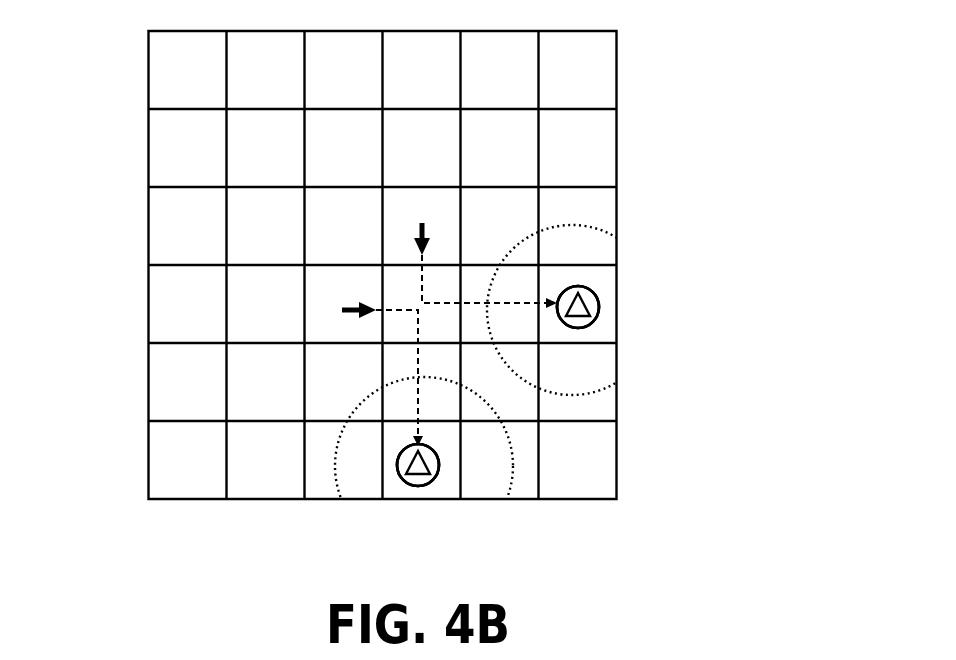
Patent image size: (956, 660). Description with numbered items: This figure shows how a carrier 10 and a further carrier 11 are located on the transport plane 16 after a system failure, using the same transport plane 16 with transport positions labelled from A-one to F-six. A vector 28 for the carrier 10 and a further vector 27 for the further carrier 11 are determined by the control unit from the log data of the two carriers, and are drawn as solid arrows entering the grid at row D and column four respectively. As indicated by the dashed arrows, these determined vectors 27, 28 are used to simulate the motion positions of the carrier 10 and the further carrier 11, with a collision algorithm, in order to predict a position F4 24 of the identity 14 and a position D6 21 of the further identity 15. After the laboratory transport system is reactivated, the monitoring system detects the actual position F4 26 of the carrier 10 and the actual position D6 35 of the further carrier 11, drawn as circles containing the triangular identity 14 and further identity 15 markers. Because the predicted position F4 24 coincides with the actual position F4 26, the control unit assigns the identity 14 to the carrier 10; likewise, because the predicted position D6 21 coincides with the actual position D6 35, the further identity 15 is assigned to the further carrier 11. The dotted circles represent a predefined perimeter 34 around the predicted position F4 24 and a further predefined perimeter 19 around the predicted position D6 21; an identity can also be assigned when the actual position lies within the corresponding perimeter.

The transport plane 16 is at (147, 457).
The carrier 10 is at (411, 477).
The identity 14 is at (418, 475).
The predicted position F4 of the identity 24 is at (445, 487).
The actual position F4 of the carrier 26 is at (452, 472).
The predefined perimeter 34 is at (334, 462).
The further carrier 11 is at (595, 293).
The further identity 15 is at (587, 307).
The predicted position D6 of the further identity 21 is at (595, 280).
The actual position D6 of the further carrier 35 is at (607, 328).
The further predefined perimeter 19 is at (577, 224).
The further vector 27 is at (422, 223).
The vector 28 is at (342, 310).